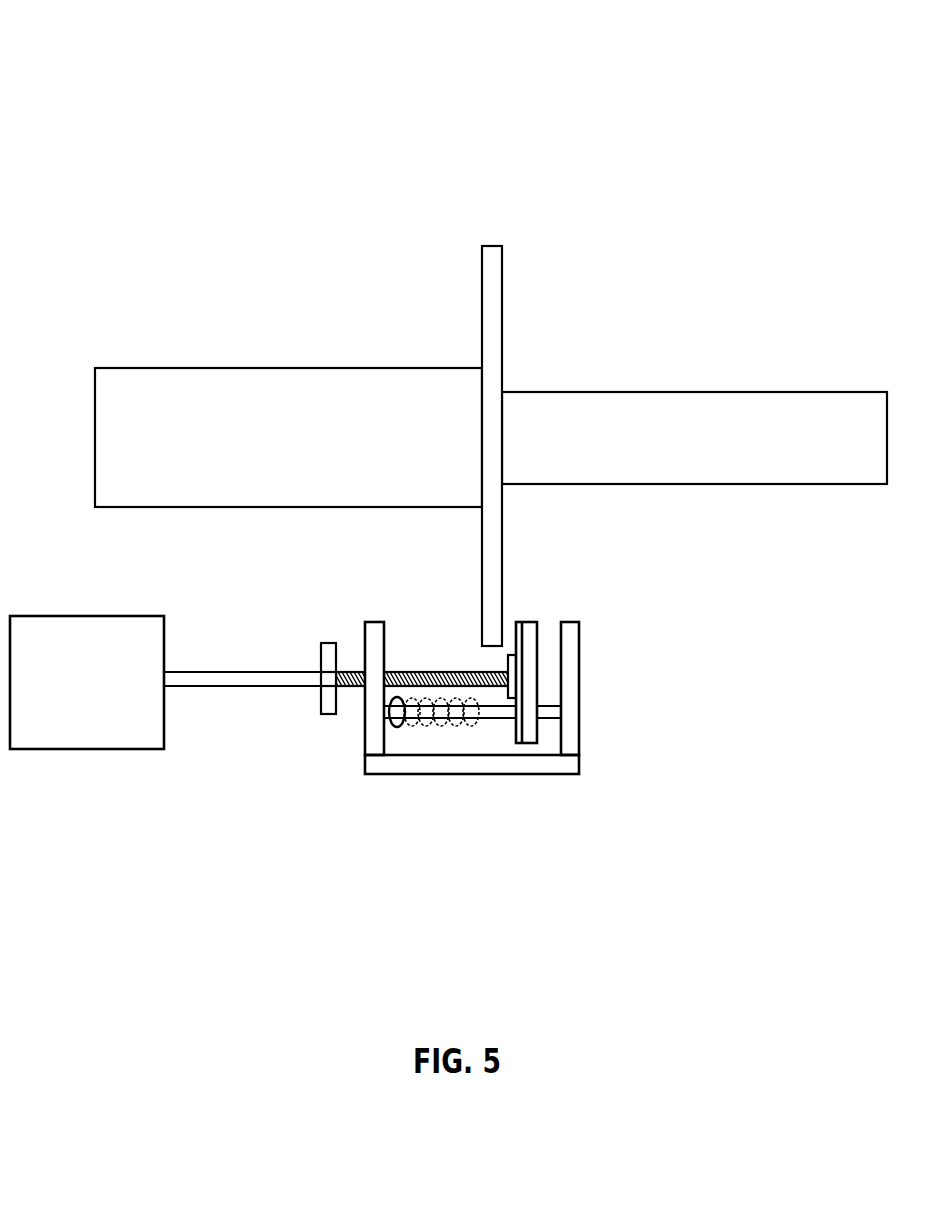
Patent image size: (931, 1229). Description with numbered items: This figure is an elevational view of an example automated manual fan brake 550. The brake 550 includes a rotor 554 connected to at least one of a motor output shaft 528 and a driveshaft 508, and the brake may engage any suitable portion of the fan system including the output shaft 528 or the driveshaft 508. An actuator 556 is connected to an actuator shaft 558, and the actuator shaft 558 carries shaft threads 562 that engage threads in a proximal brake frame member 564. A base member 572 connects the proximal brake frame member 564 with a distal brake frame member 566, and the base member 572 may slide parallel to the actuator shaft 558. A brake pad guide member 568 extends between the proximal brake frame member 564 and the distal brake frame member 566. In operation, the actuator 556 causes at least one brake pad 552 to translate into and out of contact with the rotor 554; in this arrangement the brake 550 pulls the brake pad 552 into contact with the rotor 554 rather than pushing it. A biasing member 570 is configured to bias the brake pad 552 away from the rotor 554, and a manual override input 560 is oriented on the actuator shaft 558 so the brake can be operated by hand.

The automated manual fan brake 550 is at (230, 118).
The driveshaft 508 is at (233, 410).
The motor output shaft 528 is at (809, 428).
The rotor 554 is at (492, 318).
The actuator 556 is at (40, 632).
The actuator shaft 558 is at (210, 678).
The manual override input 560 is at (328, 645).
The shaft threads 562 is at (420, 670).
The proximal brake frame member 564 is at (374, 640).
The distal brake frame member 566 is at (573, 645).
The brake pad 552 is at (528, 628).
The brake pad guide member 568 is at (553, 735).
The biasing member 570 is at (423, 728).
The base member 572 is at (450, 770).